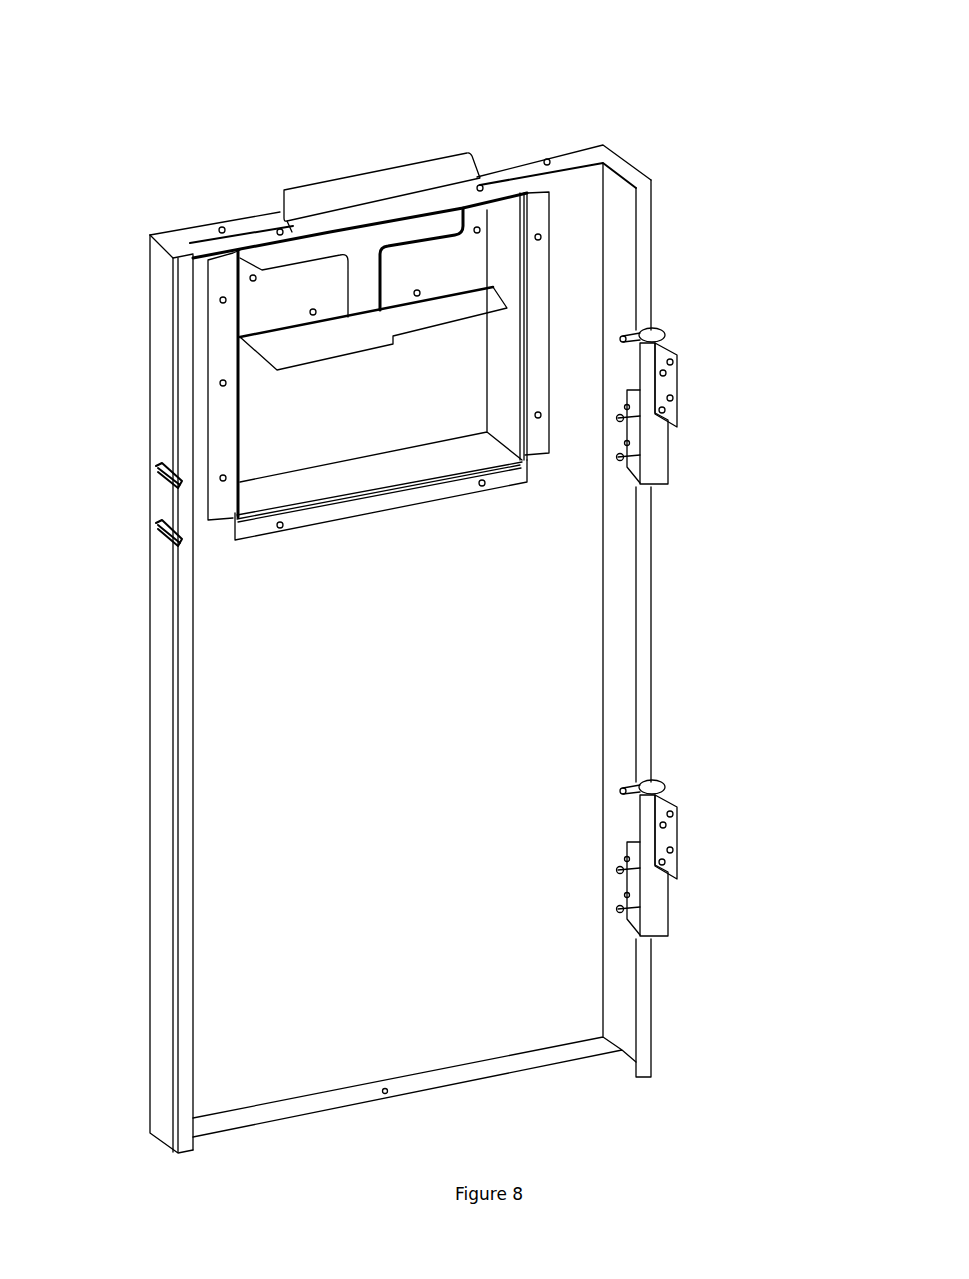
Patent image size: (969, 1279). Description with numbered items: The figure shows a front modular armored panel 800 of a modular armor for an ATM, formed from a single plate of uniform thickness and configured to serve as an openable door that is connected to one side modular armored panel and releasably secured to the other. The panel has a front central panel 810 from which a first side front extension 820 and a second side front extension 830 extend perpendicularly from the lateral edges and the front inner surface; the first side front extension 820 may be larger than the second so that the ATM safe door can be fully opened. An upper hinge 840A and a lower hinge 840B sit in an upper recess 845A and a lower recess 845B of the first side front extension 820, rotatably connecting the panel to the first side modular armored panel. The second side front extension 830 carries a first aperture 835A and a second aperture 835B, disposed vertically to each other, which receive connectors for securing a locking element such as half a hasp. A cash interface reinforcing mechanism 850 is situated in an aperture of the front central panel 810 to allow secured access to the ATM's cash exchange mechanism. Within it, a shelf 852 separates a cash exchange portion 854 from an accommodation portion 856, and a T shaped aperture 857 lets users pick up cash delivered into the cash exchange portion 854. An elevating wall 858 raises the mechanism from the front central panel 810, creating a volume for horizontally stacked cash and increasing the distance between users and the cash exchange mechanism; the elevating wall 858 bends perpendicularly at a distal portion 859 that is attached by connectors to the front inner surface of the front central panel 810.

The front modular armored panel 800 is at (790, 136).
The front central panel 810 is at (495, 975).
The first side front extension 820 is at (628, 1018).
The second side front extension 830 is at (165, 1083).
The first aperture 835A is at (158, 468).
The second aperture 835B is at (158, 527).
The upper hinge 840A is at (672, 400).
The lower hinge 840B is at (672, 850).
The upper recess 845A is at (665, 326).
The lower recess 845B is at (665, 778).
The cash interface reinforcing mechanism 850 is at (320, 162).
The shelf 852 is at (283, 352).
The cash exchange portion 854 is at (272, 305).
The accommodation portion 856 is at (280, 412).
The T shaped aperture 857 is at (318, 246).
The elevating wall 858 is at (460, 458).
The distal portion 859 is at (420, 495).